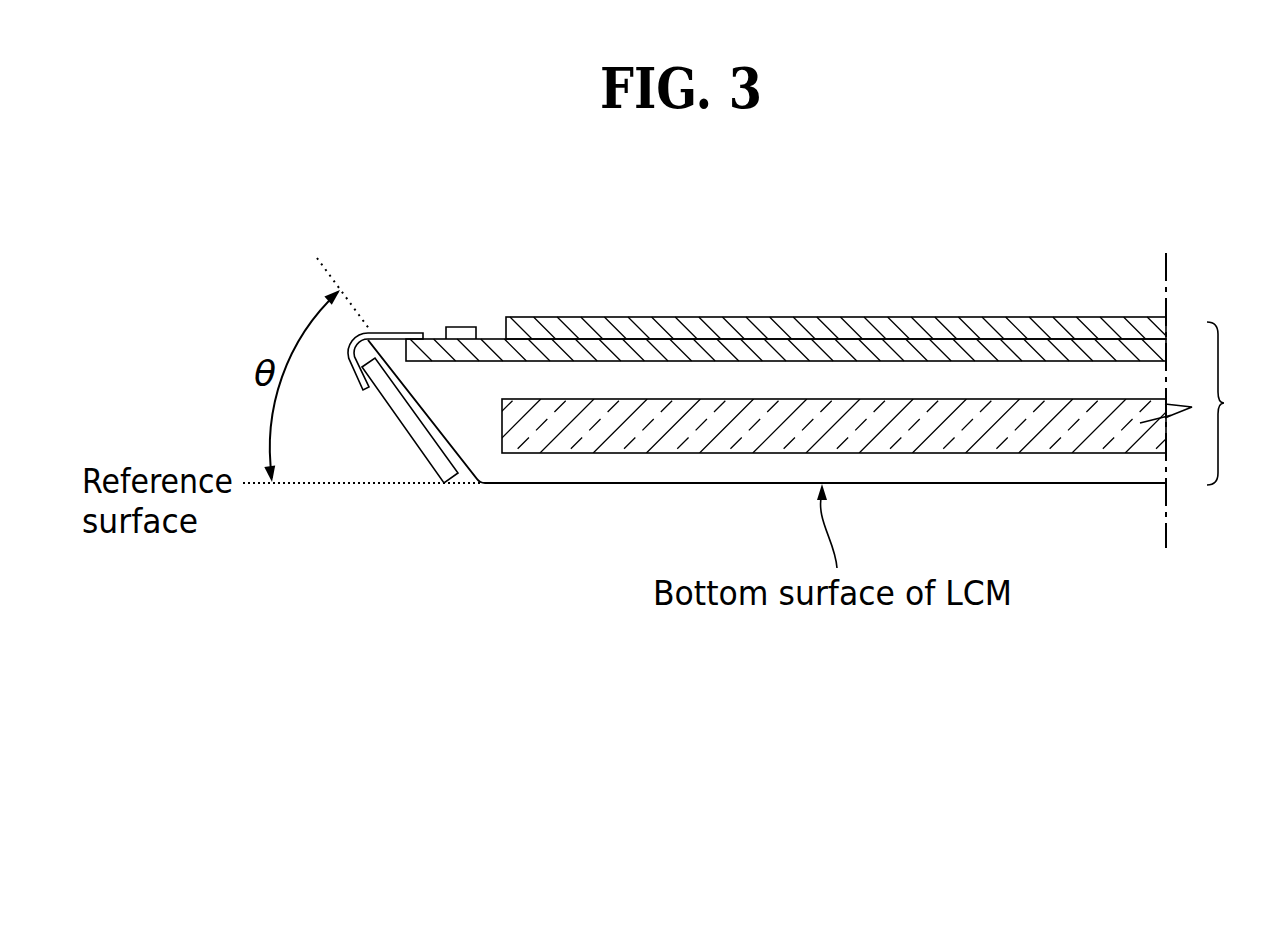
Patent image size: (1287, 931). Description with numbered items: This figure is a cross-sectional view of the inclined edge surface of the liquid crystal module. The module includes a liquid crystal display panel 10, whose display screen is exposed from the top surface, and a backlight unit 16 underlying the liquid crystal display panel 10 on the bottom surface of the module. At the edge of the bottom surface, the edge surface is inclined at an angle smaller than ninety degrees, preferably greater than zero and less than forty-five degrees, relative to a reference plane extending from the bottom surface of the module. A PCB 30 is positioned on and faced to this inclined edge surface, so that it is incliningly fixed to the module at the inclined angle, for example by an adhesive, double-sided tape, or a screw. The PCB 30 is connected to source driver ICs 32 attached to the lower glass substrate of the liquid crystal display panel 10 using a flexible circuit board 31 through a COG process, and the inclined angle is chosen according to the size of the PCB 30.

The liquid crystal display panel 10 is at (1176, 336).
The backlight unit 16 is at (890, 417).
The PCB 30 is at (432, 458).
The flexible circuit board 31 is at (388, 333).
The source driver ICs 32 is at (458, 327).